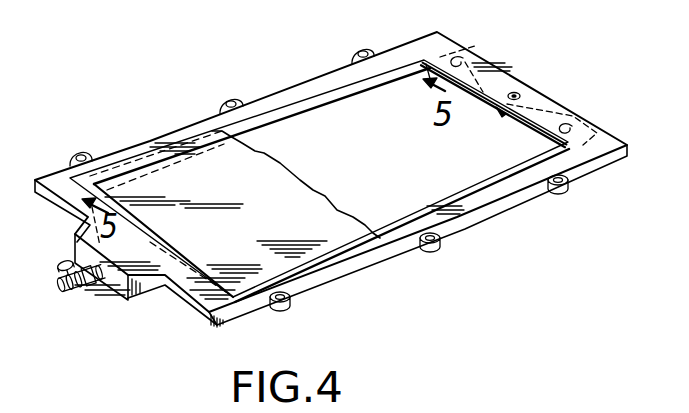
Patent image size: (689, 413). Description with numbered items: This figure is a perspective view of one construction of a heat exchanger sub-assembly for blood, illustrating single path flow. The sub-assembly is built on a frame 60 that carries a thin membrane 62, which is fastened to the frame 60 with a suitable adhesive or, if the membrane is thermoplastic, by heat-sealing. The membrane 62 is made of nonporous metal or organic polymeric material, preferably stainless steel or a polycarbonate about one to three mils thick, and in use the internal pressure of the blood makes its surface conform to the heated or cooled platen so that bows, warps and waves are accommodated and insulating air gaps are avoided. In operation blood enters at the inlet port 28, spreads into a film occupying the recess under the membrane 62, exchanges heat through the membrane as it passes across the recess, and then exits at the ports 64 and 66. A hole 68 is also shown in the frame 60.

The inlet port 28 is at (70, 290).
The frame 60 is at (504, 194).
The membrane 62 is at (130, 157).
The port 64 is at (478, 45).
The port 66 is at (580, 120).
The hole 68 is at (520, 94).